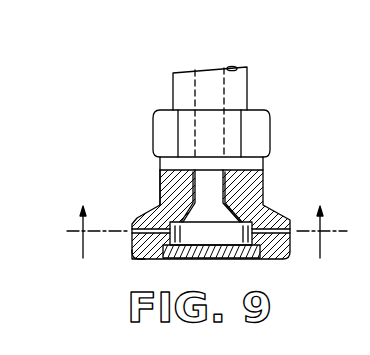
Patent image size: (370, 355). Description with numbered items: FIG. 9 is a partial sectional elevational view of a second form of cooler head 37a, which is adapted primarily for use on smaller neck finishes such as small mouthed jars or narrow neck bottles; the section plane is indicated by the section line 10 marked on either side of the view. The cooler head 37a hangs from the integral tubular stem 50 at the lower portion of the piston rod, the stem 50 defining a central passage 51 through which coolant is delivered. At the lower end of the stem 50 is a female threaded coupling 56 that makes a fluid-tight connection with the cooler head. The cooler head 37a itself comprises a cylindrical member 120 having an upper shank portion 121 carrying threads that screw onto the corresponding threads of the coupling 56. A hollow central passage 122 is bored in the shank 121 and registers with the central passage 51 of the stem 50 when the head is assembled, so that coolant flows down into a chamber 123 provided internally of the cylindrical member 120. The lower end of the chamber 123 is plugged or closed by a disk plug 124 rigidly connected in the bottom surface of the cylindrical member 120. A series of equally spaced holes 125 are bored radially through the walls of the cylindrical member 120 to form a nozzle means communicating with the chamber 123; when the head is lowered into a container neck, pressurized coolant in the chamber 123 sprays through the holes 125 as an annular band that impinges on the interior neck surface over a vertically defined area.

The tubular stem 50 is at (237, 85).
The passage 51 is at (219, 67).
The female threaded coupling 56 is at (262, 127).
The cylindrical member 120 is at (275, 212).
The upper shank portion 121 is at (262, 178).
The hollow central passage 122 is at (160, 180).
The chamber 123 is at (211, 233).
The disk plug 124 is at (224, 254).
The holes 125 is at (153, 232).
The cooler head 37a is at (129, 256).
The section line 10- 10 is at (207, 221).